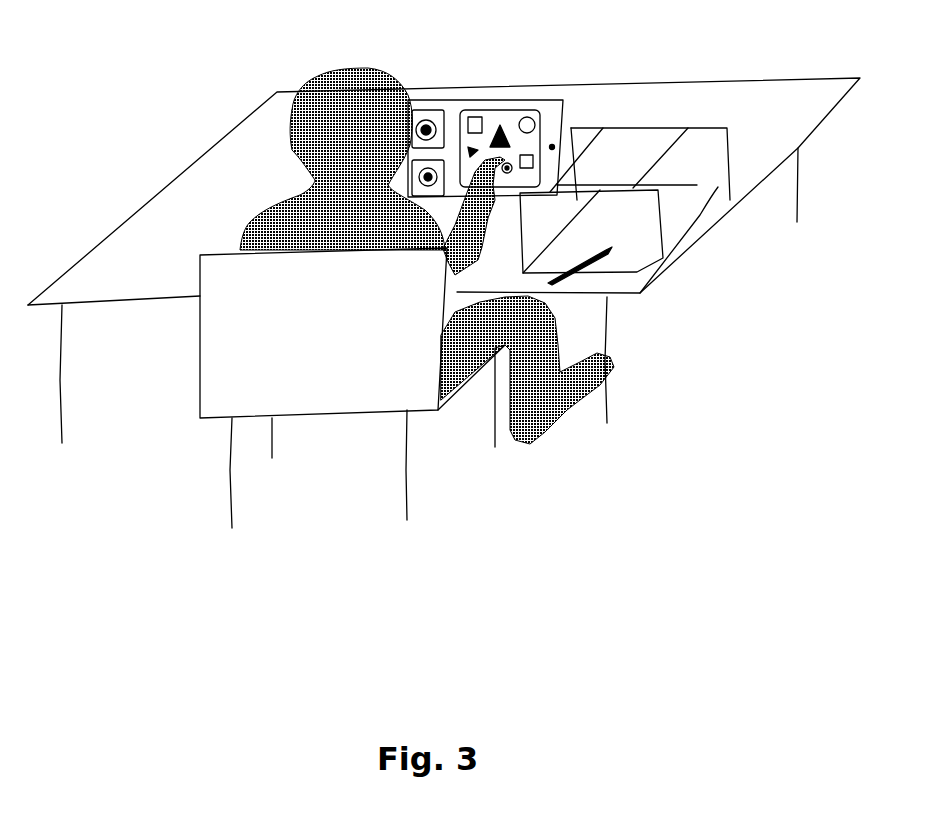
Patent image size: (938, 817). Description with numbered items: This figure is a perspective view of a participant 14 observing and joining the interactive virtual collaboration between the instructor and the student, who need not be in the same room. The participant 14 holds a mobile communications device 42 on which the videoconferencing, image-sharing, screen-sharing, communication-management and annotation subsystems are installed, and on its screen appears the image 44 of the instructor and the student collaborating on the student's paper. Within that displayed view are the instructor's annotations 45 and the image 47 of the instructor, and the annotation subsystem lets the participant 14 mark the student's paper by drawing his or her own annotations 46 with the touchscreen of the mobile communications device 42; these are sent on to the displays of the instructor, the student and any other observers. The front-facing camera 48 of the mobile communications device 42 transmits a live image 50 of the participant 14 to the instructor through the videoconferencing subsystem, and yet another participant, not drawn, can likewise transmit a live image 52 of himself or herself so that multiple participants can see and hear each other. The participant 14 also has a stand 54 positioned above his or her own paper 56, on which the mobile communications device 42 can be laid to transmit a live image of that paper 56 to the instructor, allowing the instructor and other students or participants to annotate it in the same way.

The participant 14 is at (320, 87).
The mobile communications device 42 is at (450, 118).
The image 44 is at (513, 117).
The annotations 45 is at (500, 128).
The annotations 46 is at (505, 175).
The image of the instructor 47 is at (520, 177).
The front-facing camera 48 is at (555, 145).
The live image 50 is at (425, 112).
The live image 52 is at (433, 193).
The stand 54 is at (665, 125).
The paper 56 is at (675, 223).